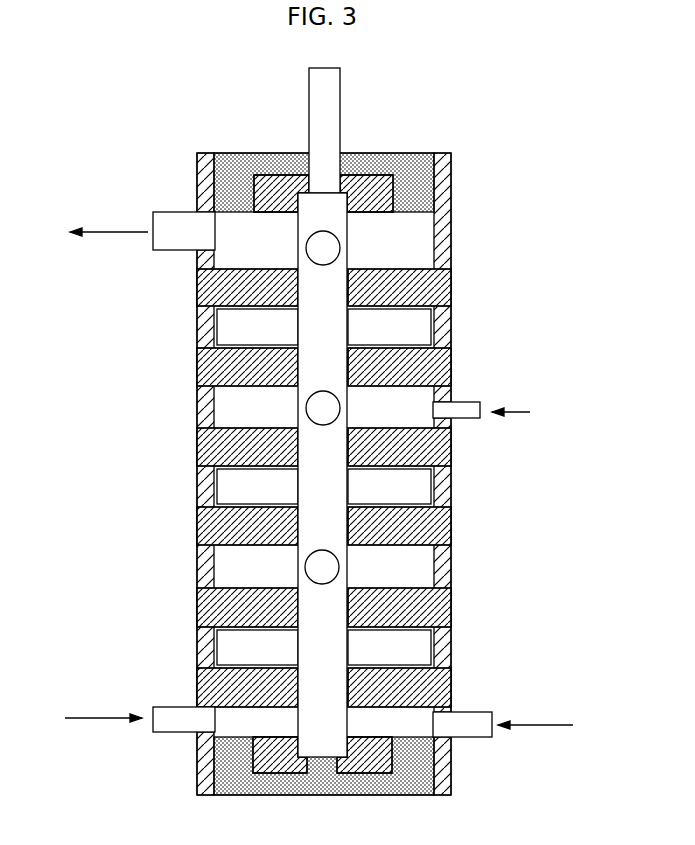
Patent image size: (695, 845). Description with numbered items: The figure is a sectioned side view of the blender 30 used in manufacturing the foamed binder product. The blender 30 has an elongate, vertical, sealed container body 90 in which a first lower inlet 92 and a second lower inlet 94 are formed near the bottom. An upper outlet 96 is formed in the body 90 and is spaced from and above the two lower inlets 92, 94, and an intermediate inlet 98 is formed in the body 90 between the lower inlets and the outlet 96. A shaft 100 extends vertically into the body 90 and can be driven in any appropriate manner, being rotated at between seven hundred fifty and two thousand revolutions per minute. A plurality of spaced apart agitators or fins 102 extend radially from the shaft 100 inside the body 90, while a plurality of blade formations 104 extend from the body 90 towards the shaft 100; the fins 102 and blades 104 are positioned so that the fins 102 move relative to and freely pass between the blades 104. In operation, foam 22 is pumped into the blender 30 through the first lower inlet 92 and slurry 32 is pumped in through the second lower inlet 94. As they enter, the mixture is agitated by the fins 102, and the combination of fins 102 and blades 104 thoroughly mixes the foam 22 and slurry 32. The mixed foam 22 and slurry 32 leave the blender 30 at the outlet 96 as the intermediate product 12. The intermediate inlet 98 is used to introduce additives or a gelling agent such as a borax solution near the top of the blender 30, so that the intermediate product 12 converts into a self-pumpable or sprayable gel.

The blender 30 is at (478, 99).
The container body 90 is at (452, 183).
The shaft 100 is at (335, 122).
The blade formations 104 is at (452, 278).
The agitators or fins 102 is at (424, 331).
The upper outlet 96 is at (163, 243).
The intermediate product 12 is at (103, 230).
The intermediate inlet 98 is at (477, 402).
The second lower inlet 94 is at (170, 707).
The slurry 32 is at (83, 717).
The first lower inlet 92 is at (478, 712).
The foam 22 is at (540, 725).